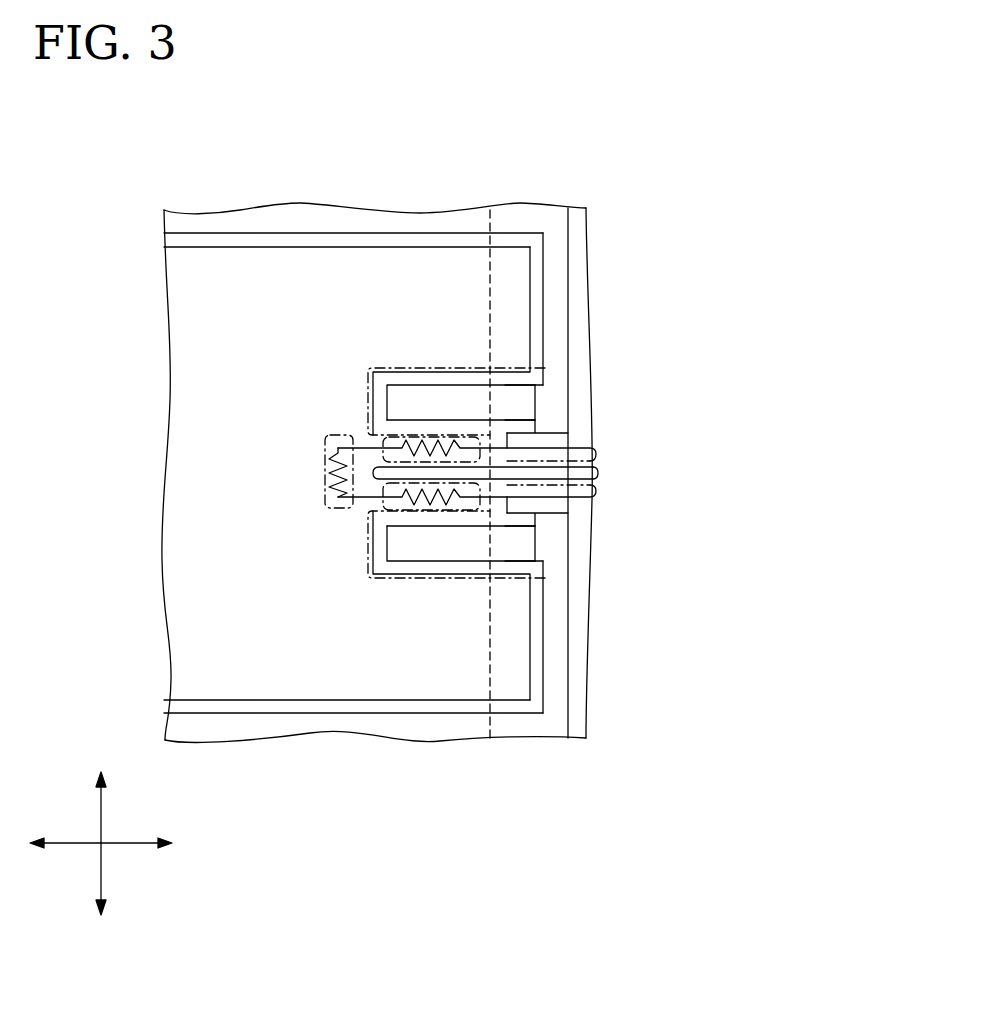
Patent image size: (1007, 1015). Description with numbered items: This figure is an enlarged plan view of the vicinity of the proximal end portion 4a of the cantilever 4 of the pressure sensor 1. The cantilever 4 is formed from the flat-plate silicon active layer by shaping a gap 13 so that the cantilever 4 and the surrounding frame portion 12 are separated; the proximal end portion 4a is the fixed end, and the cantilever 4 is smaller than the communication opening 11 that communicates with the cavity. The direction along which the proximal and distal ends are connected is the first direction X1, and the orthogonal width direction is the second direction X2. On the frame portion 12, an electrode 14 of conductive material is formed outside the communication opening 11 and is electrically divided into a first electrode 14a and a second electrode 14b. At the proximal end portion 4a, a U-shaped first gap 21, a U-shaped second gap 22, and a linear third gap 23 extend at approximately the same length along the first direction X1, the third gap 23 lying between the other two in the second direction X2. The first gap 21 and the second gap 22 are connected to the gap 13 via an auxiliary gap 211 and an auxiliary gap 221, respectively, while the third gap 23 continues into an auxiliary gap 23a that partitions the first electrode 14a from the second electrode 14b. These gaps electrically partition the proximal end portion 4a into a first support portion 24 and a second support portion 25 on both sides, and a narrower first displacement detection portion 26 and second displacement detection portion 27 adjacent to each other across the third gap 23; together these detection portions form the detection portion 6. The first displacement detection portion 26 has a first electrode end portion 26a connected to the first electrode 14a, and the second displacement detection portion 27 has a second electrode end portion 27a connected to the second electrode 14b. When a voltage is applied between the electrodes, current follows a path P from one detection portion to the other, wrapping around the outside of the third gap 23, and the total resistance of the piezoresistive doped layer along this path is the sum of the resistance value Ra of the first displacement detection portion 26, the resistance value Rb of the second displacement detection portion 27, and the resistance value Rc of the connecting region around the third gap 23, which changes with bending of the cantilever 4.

The pressure sensor 1 is at (680, 152).
The cantilever 4 is at (247, 320).
The proximal end portion 4a is at (463, 683).
The detection portion 6 is at (78, 422).
The communication opening 11 is at (490, 262).
The frame portion 12 is at (197, 222).
The gap 13 is at (330, 243).
The electrode 14 is at (792, 278).
The first electrode 14a is at (576, 234).
The second electrode 14b is at (586, 690).
The first gap 21 is at (445, 366).
The auxiliary gap 211 is at (513, 385).
The second gap 22 is at (445, 580).
The auxiliary gap 221 is at (513, 517).
The third gap 23 is at (373, 473).
The auxiliary gap 23a is at (597, 473).
The first support portion 24 is at (465, 298).
The second support portion 25 is at (465, 648).
The first displacement detection portion 26 is at (390, 442).
The first electrode end portion 26a is at (498, 456).
The second displacement detection portion 27 is at (390, 504).
The second electrode end portion 27a is at (498, 506).
The path of the current P is at (338, 447).
The electric resistance value Ra is at (421, 443).
The electric resistance value Rb is at (420, 500).
The electric resistance value Rc is at (327, 465).
The first direction X1 is at (136, 846).
The second direction X2 is at (100, 873).